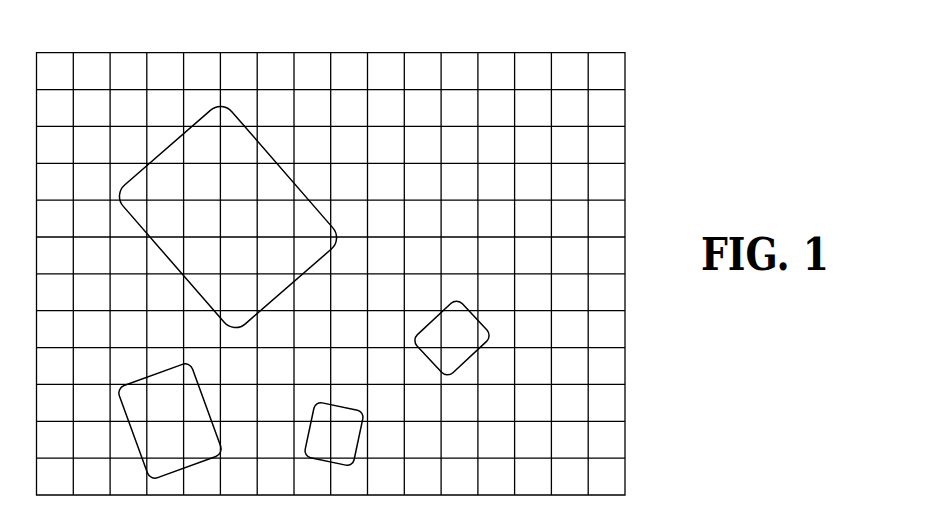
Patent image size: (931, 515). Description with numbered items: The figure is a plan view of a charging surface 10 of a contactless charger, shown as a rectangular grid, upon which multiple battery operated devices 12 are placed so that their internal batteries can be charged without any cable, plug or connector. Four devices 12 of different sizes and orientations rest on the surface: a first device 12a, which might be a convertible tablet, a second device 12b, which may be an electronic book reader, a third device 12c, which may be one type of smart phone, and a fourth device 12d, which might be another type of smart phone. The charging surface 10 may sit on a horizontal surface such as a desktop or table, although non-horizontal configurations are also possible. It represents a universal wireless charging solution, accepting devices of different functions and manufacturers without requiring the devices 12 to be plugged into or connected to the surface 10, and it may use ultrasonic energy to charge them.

The charging surface 10 is at (422, 53).
The battery operated devices 12 is at (208, 371).
The first device 12a is at (203, 228).
The second device 12b is at (157, 430).
The third device 12c is at (318, 440).
The fourth device 12d is at (429, 354).